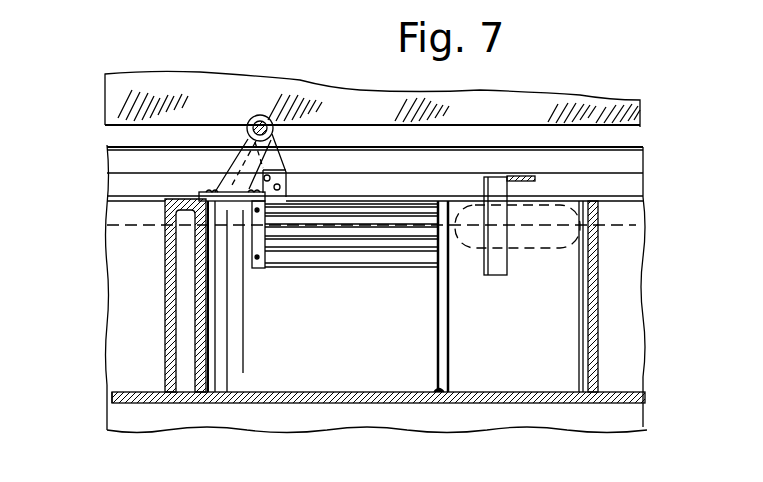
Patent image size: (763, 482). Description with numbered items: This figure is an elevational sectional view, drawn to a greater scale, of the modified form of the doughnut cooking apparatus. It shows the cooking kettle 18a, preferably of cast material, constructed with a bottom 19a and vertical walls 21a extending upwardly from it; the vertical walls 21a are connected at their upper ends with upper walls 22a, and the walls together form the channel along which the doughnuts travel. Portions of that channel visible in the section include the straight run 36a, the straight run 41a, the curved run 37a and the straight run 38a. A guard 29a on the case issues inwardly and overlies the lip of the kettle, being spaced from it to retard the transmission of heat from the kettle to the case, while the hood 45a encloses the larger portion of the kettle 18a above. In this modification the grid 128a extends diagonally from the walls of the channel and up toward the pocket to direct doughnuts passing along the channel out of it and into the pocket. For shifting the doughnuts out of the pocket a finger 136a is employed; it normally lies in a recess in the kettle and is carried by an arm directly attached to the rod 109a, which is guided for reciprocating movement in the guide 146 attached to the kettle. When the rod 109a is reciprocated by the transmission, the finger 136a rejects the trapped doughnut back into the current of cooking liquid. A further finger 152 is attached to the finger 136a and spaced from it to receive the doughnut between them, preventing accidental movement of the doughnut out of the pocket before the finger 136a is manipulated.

The rod 109a is at (263, 126).
The guide 146 is at (238, 167).
The finger 136a is at (286, 183).
The hood 45a is at (627, 115).
The guard 29a is at (630, 160).
The upper wall 22a is at (176, 196).
The vertical wall 21a is at (197, 297).
The straight run 36a is at (128, 341).
The straight run 41a is at (623, 368).
The cooking kettle 18a is at (167, 400).
The curved run 37a is at (285, 375).
The bottom 19a is at (382, 404).
The straight run 38a is at (537, 373).
The grid 128a is at (348, 270).
The finger 152 is at (495, 265).